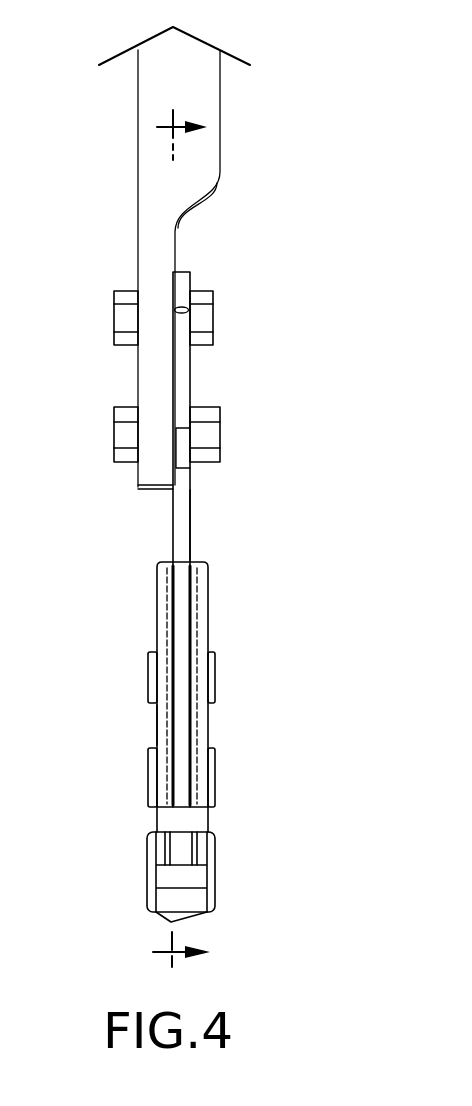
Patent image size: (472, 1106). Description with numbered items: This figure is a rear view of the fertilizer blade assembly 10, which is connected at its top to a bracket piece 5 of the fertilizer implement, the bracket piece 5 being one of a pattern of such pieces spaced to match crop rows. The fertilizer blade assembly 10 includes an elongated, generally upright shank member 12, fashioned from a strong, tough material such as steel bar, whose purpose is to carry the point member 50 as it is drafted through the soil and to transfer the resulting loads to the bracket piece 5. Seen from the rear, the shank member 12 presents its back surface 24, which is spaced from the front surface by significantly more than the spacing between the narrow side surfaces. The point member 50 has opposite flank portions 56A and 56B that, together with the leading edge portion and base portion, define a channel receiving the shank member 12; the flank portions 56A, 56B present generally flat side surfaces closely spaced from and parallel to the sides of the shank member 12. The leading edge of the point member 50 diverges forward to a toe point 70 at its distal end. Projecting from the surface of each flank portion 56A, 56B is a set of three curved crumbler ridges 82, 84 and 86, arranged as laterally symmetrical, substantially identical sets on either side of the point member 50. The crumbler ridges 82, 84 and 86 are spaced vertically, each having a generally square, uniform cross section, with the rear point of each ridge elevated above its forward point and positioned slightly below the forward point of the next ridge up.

The bracket piece 5 is at (145, 175).
The fertilizer blade assembly 10 is at (122, 522).
The shank member 12 is at (172, 530).
The back surface 24 is at (180, 535).
The point member 50 is at (143, 598).
The flank portion 56A is at (206, 733).
The flank portion 56B is at (157, 737).
The toe point 70 is at (172, 922).
The crumbler ridge 82 is at (148, 868).
The crumbler ridge 84 is at (150, 787).
The crumbler ridge 86 is at (148, 686).